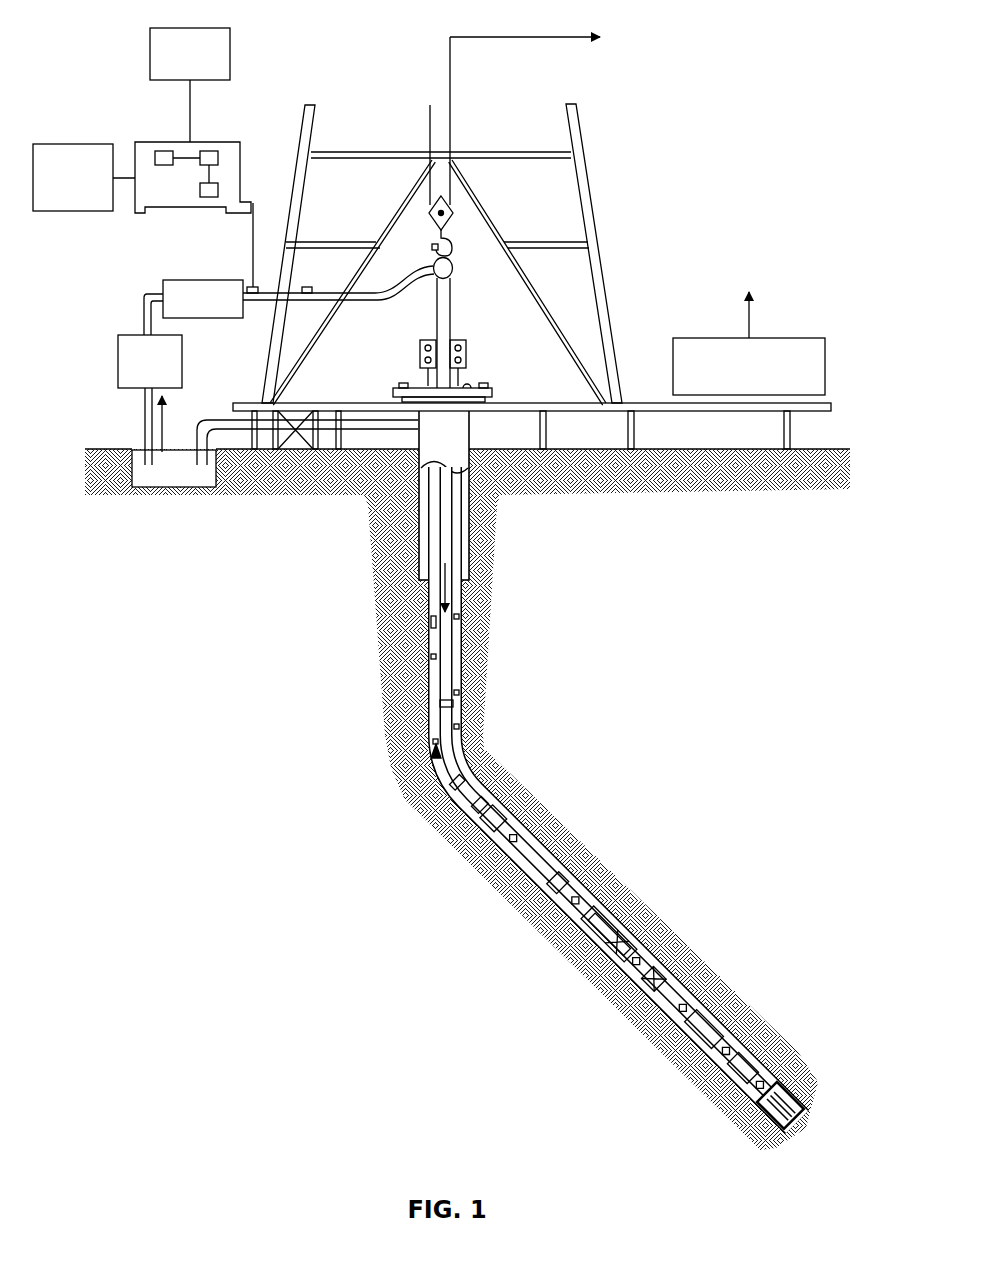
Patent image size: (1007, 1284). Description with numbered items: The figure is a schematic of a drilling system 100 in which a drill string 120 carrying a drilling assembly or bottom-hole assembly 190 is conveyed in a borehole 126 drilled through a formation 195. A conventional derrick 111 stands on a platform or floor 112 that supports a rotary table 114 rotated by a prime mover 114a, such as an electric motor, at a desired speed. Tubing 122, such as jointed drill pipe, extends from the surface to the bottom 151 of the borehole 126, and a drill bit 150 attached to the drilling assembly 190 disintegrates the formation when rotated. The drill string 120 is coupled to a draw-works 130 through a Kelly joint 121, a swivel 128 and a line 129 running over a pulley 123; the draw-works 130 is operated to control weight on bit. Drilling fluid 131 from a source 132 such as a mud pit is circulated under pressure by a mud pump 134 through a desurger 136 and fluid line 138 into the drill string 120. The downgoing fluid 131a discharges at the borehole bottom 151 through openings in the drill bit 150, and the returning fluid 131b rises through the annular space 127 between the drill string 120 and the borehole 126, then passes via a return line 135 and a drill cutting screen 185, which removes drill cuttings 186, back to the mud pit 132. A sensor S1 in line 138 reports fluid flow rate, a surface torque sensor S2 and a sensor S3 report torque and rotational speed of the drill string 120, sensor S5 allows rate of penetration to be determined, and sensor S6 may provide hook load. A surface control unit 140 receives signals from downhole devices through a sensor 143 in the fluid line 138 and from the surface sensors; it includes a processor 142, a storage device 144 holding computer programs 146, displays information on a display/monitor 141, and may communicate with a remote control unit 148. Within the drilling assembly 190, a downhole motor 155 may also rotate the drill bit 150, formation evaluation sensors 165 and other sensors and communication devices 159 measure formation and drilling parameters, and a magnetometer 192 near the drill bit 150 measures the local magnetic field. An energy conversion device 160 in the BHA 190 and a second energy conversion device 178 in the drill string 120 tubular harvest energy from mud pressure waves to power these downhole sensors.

The drilling system 100 is at (368, 46).
The derrick 111 is at (600, 254).
The platform or floor 112 is at (620, 401).
The rotary table 114 is at (466, 398).
The prime mover 114a is at (468, 355).
The drill string 120 is at (461, 670).
The Kelly joint 121 is at (451, 327).
The tubing 122 is at (433, 655).
The pulley 123 is at (455, 213).
The borehole 126 is at (466, 752).
The annular space 127 is at (482, 790).
The swivel 128 is at (432, 282).
The line 129 is at (452, 122).
The draw-works 130 is at (790, 338).
The drilling fluid 131 is at (140, 455).
The drilling fluid from the drilling tubular 131a is at (433, 588).
The returning drilling fluid 131b is at (434, 752).
The source of drilling fluid 132 is at (163, 486).
The mud pump 134 is at (118, 345).
The return line 135 is at (383, 431).
The desurger 136 is at (212, 279).
The fluid line 138 is at (266, 306).
The surface control unit 140 is at (240, 154).
The display/monitor 141 is at (175, 28).
The processor 142 is at (160, 150).
The sensor 143 is at (256, 284).
The storage device 144 is at (210, 150).
The computer programs 146 is at (206, 197).
The remote control unit 148 is at (80, 212).
The drill bit 150 is at (789, 1076).
The borehole bottom 151 is at (770, 1136).
The downhole motor 155 is at (545, 860).
The sensors and communication devices 159 is at (777, 1057).
The energy conversion device 160 is at (737, 1051).
The formation evaluation sensors 165 is at (640, 990).
The energy conversion device 178 is at (454, 801).
The drill cutting screen 185 is at (275, 420).
The drill cuttings 186 is at (460, 617).
The drilling assembly 190 is at (673, 836).
The magnetometer 192 is at (722, 1020).
The formation 195 is at (813, 917).
The sensor S1 is at (307, 287).
The surface torque sensor S2 is at (485, 383).
The sensor S3 is at (403, 383).
The sensor S5 is at (451, 290).
The sensor S6 is at (435, 246).